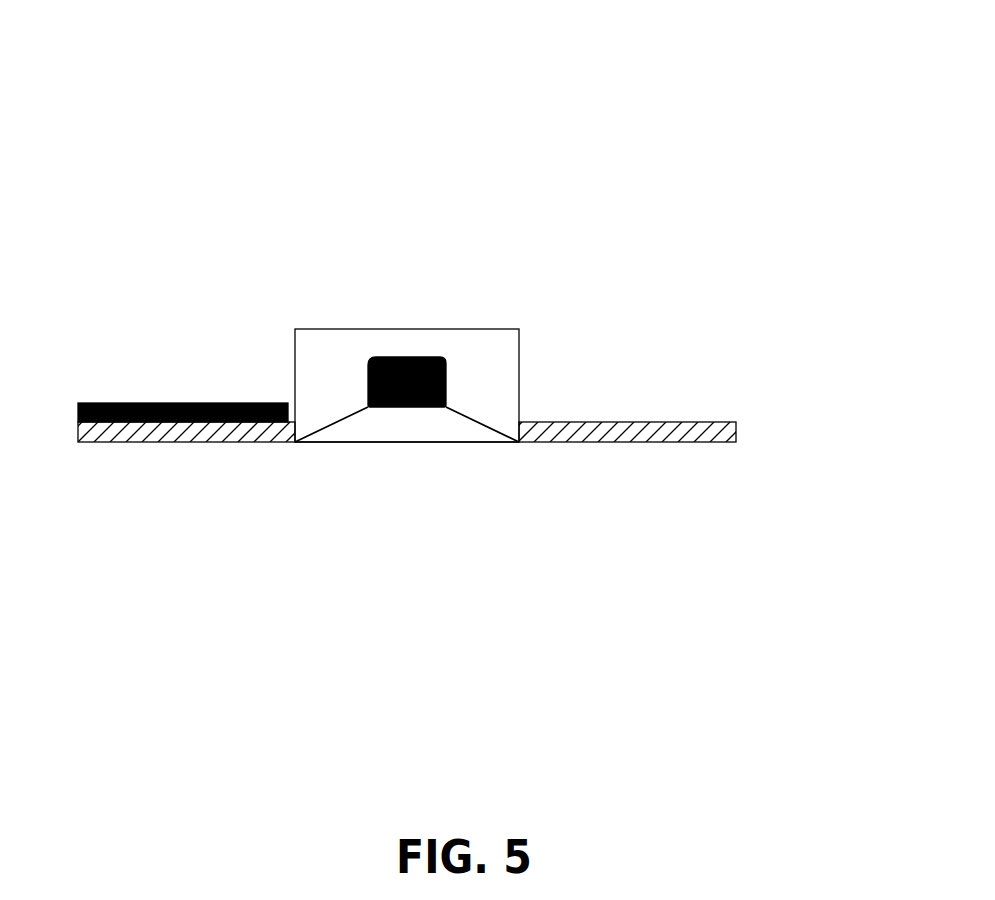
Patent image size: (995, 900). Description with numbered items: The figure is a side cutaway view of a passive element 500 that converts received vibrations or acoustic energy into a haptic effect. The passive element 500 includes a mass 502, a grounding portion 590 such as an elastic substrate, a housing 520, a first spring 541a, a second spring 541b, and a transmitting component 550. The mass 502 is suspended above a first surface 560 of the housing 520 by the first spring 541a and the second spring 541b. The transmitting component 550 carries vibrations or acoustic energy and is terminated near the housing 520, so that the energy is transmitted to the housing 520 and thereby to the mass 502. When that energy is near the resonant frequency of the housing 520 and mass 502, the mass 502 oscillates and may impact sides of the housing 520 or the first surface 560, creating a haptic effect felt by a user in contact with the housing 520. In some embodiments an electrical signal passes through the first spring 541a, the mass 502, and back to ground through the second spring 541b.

The passive element 500 is at (562, 70).
The mass 502 is at (437, 358).
The housing 520 is at (519, 385).
The first spring 541a is at (335, 423).
The second spring 541b is at (463, 416).
The transmitting component 550 is at (97, 403).
The first surface 560 is at (407, 442).
The grounding portion 590 is at (642, 442).